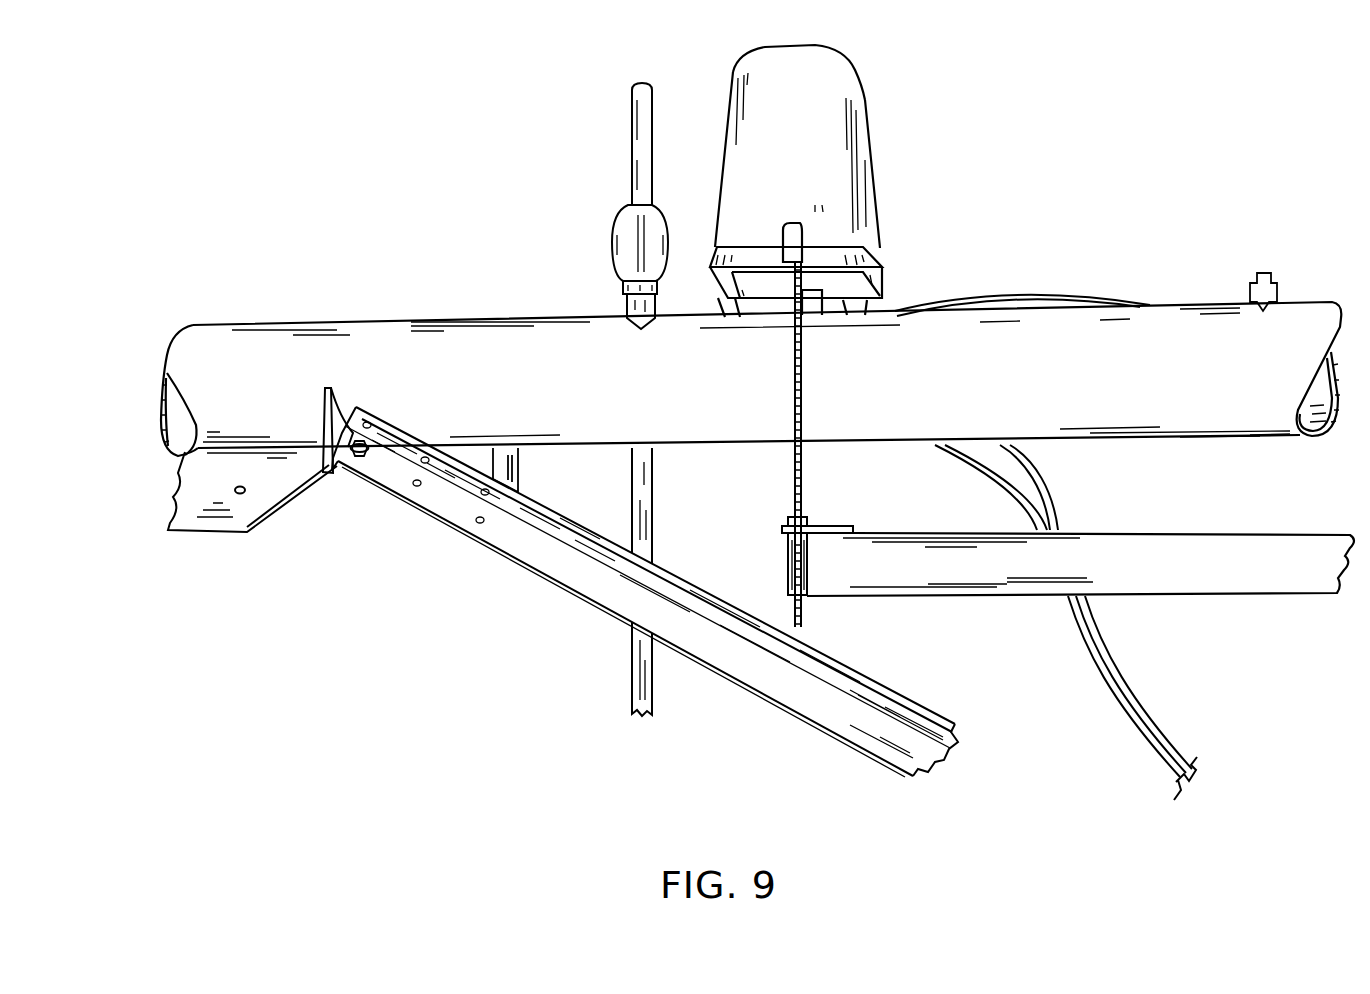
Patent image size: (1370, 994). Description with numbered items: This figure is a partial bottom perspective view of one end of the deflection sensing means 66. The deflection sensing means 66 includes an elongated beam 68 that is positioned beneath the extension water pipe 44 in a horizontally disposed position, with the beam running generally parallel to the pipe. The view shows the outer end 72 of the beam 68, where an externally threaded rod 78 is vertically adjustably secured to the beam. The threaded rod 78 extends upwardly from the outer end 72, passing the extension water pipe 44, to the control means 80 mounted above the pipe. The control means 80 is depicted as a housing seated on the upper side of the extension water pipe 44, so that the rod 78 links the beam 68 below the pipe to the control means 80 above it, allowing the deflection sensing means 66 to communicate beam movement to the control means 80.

The control means 80 is at (864, 90).
The extension water pipe 44 is at (1122, 328).
The externally threaded rod 78 is at (805, 400).
The outer end 72 is at (787, 573).
The elongated beam 68 is at (1010, 580).
The deflection sensing means 66 is at (1285, 608).